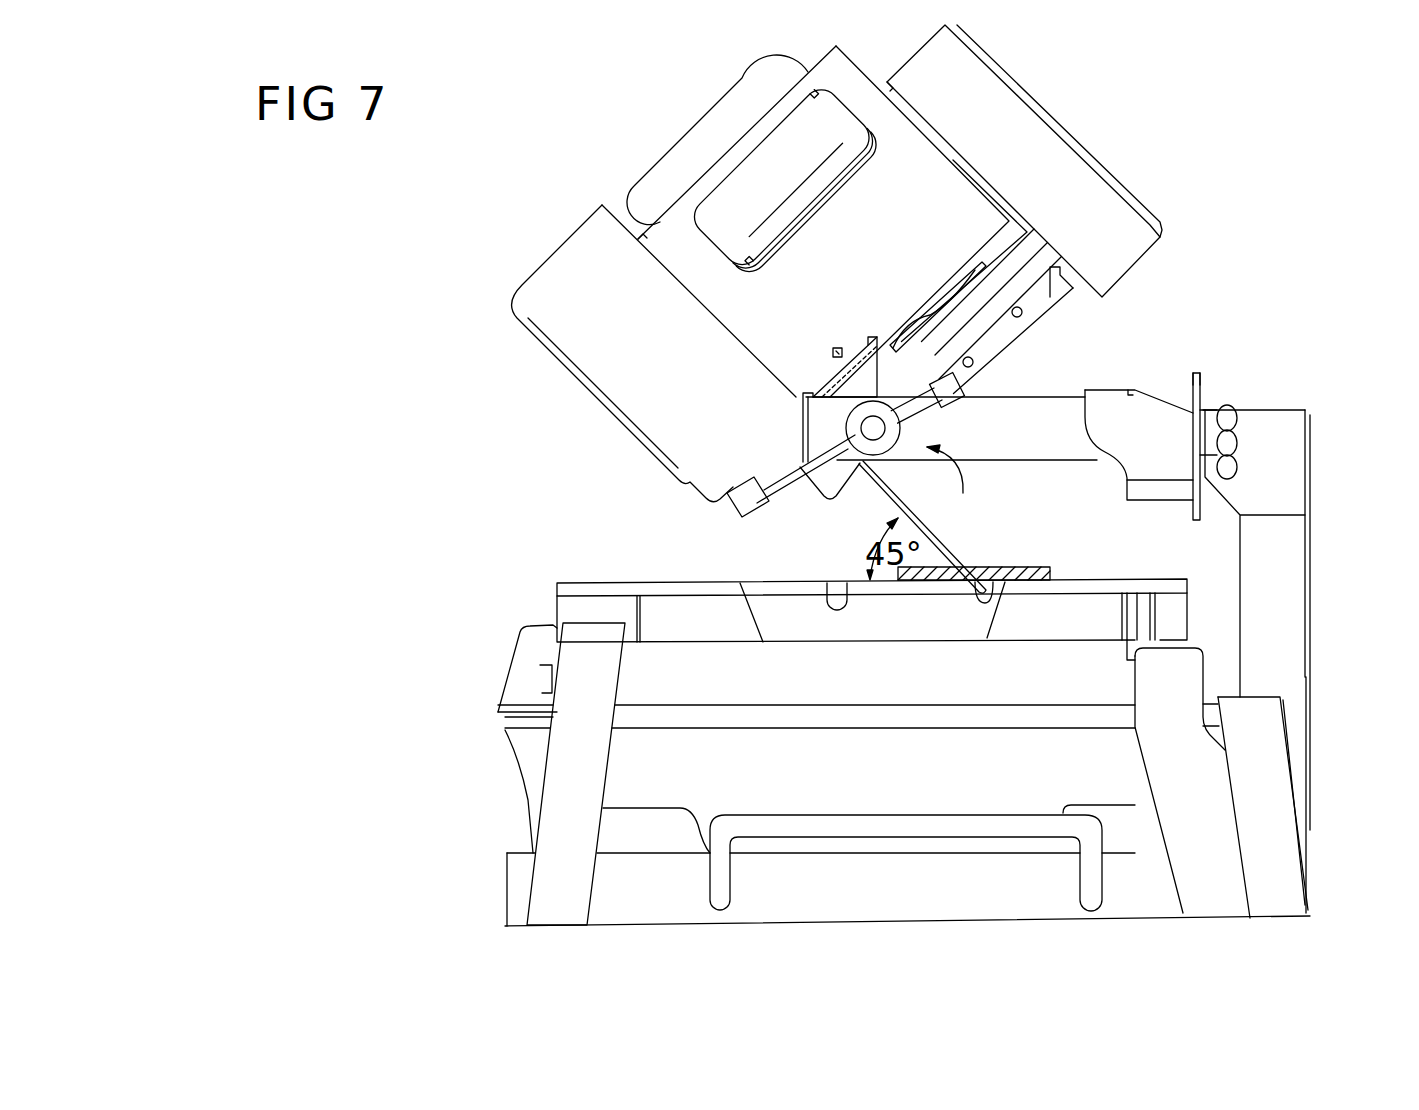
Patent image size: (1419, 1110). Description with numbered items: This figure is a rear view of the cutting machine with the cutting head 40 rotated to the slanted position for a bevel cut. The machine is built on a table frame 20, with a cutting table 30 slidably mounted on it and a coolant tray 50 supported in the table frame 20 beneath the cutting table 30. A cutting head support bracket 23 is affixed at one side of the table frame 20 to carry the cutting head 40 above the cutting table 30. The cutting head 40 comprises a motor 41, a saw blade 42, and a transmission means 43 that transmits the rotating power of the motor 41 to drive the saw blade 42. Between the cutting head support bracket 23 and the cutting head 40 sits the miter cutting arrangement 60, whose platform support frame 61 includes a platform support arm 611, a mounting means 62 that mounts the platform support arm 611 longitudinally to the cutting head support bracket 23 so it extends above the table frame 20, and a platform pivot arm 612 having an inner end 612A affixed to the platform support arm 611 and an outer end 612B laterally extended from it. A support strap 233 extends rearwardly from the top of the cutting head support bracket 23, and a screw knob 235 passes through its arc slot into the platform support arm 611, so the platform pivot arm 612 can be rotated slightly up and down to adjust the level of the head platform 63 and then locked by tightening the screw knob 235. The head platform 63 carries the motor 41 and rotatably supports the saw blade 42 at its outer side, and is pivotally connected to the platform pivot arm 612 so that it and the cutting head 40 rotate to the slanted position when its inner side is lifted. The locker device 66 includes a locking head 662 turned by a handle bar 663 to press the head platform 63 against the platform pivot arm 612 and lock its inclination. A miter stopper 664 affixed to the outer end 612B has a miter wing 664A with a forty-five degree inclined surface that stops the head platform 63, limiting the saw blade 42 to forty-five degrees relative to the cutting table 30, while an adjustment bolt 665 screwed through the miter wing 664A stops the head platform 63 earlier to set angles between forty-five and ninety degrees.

The table frame 20 is at (470, 803).
The cutting head support bracket 23 is at (1290, 652).
The cutting table 30 is at (526, 574).
The cutting head 40 is at (556, 395).
The motor 41 is at (688, 220).
The saw blade 42 is at (890, 503).
The transmission means 43 is at (1048, 90).
The coolant tray 50 is at (708, 755).
The miter cutting arrangement 60 is at (1293, 260).
The platform support frame 61 is at (1138, 367).
The mounting means 62 is at (1233, 384).
The head platform 63 is at (932, 365).
The locker device 66 is at (956, 491).
The support strap 233 is at (1197, 378).
The screw knob 235 is at (1237, 408).
The platform support arm 611 is at (1173, 490).
The platform pivot arm 612 is at (1018, 453).
The inner end 612A is at (1102, 452).
The outer end 612B is at (806, 405).
The locking head 662 is at (900, 428).
The handle bar 663 is at (765, 505).
The miter stopper 664 is at (890, 340).
The miter wing 664A is at (860, 347).
The adjustment bolt 665 is at (834, 352).